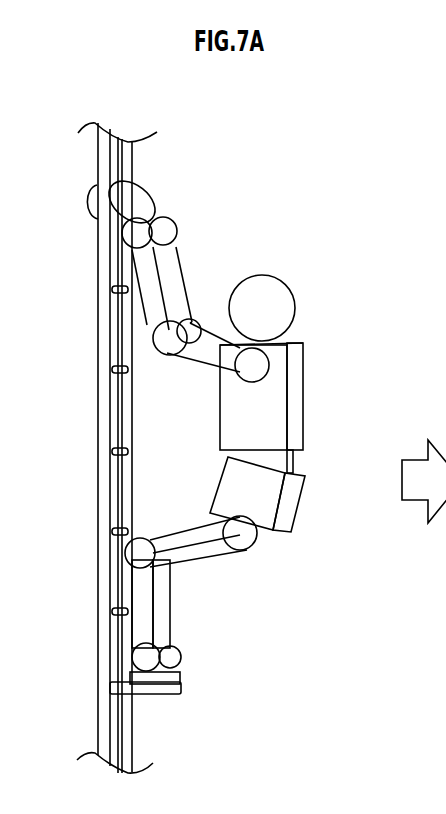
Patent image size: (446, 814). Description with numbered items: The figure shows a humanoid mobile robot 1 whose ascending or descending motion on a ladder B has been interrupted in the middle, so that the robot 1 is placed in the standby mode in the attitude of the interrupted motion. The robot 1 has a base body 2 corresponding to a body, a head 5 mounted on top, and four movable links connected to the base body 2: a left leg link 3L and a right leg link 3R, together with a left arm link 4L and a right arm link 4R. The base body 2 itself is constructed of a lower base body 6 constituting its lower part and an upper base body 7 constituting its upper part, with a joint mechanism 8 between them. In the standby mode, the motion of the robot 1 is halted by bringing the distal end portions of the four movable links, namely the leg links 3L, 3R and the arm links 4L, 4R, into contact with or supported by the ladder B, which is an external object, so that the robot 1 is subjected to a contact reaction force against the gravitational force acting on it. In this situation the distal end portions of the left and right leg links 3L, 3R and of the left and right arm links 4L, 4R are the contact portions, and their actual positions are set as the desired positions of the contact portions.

The mobile robot 1 is at (326, 268).
The base body 2 is at (341, 430).
The head 5 is at (268, 277).
The upper base body 7 is at (304, 390).
The waist joint 8 is at (300, 460).
The lower base body 6 is at (297, 507).
The right arm link 4R is at (199, 312).
The left arm link 4L is at (158, 367).
The left leg link 3L is at (180, 531).
The right leg link 3R is at (177, 617).
The ladder B is at (93, 603).